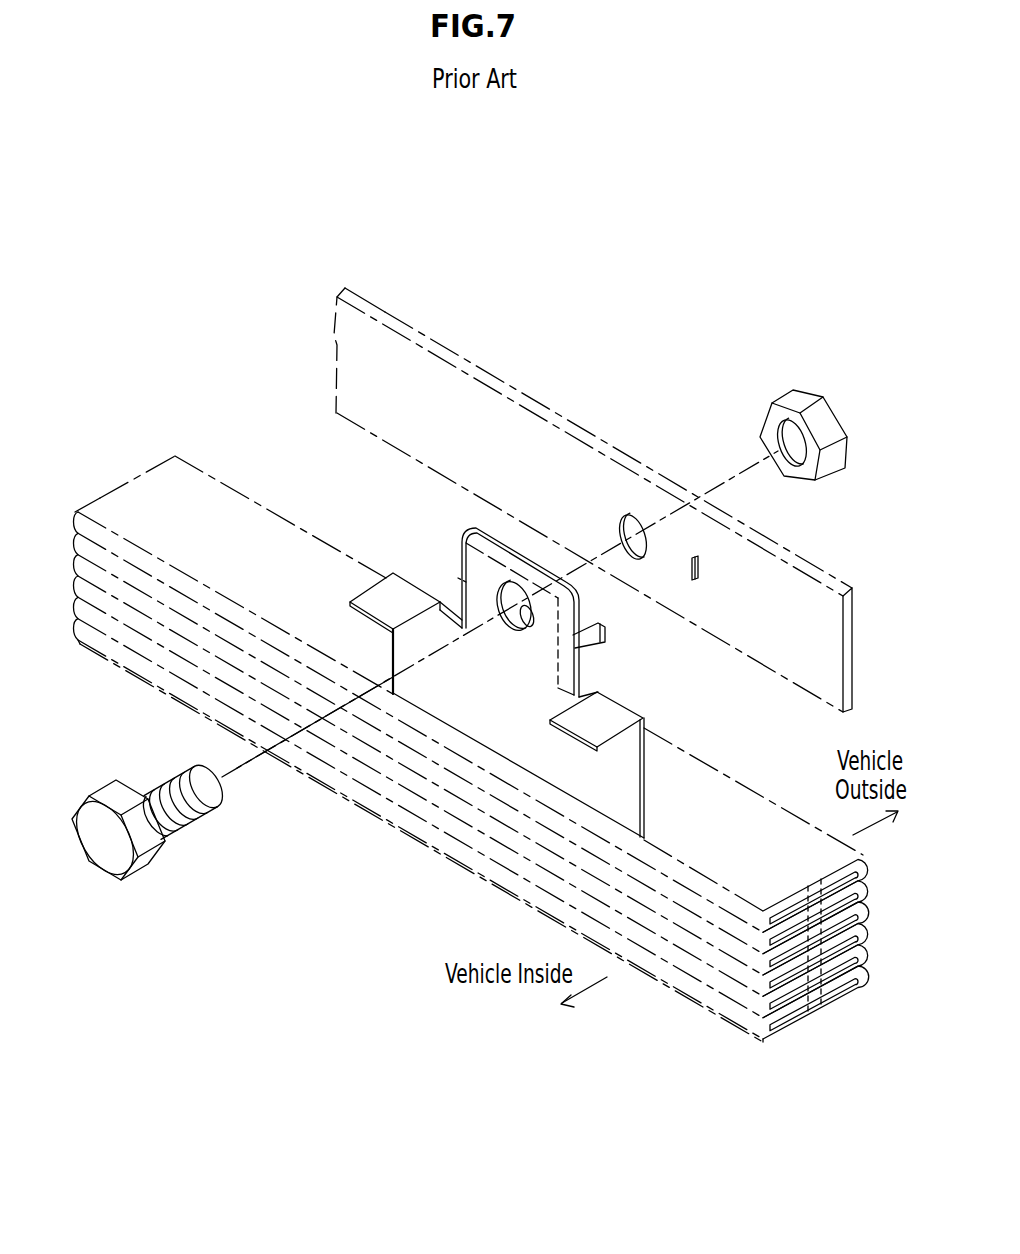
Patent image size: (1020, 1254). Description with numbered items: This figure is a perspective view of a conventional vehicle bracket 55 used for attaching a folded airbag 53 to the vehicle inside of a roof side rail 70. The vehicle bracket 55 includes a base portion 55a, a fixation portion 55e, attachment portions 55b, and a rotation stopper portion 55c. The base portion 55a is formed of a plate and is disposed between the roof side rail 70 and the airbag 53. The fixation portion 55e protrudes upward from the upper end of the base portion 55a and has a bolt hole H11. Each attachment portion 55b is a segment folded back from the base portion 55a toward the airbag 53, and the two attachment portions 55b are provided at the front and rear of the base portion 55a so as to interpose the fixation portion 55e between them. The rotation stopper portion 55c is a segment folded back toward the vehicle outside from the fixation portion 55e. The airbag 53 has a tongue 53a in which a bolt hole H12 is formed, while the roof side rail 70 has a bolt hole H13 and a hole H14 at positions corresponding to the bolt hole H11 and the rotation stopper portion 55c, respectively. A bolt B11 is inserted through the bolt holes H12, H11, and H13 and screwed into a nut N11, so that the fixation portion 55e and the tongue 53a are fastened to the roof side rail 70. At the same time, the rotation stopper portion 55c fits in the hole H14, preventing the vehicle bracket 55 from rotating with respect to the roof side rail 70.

The folded airbag 53 is at (697, 977).
The tongue 53a is at (462, 580).
The vehicle bracket 55 is at (540, 660).
The base portion 55a is at (518, 720).
The attachment portions 55b is at (372, 602).
The rotation stopper portion 55c is at (620, 657).
The fixation portion 55e is at (519, 593).
The bolt hole H11 is at (525, 616).
The bolt hole H12 is at (519, 617).
The roof side rail 70 is at (593, 497).
The bolt hole H13 is at (628, 512).
The hole H14 is at (688, 560).
The nut N11 is at (795, 397).
The bolt B11 is at (114, 852).